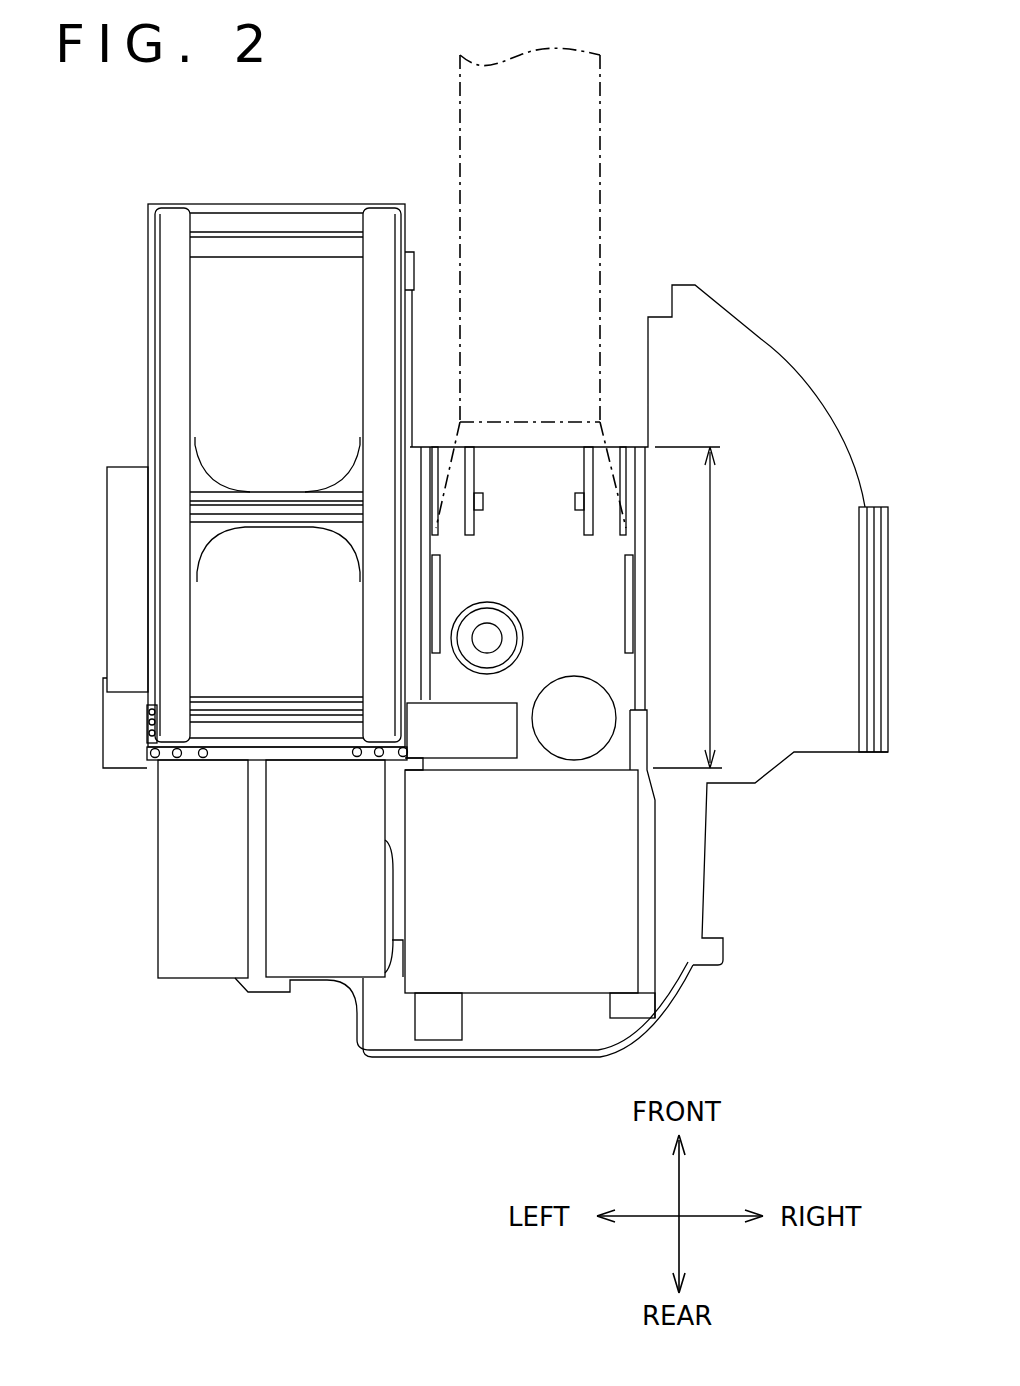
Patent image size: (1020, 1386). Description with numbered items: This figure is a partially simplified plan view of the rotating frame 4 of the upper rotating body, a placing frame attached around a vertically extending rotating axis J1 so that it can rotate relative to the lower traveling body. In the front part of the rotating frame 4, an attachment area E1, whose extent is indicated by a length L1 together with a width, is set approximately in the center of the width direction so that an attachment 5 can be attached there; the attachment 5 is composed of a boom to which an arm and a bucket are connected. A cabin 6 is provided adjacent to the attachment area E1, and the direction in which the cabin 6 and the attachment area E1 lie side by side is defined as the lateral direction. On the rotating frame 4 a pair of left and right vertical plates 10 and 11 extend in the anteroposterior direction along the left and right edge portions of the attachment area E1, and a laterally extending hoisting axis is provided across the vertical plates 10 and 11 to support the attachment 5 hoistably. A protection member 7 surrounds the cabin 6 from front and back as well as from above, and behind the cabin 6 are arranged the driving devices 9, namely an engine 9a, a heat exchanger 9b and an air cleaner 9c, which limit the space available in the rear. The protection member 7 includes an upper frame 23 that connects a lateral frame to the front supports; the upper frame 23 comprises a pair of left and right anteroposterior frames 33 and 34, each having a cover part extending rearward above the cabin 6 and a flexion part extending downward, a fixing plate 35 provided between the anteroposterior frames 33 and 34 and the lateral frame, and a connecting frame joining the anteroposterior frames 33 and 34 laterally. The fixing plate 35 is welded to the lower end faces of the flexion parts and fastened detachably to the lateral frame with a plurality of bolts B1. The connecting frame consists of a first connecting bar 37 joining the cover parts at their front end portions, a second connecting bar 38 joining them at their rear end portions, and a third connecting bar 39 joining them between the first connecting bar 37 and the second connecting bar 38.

The rotating frame 4 is at (748, 339).
The attachment 5 is at (602, 173).
The cabin 6 is at (242, 416).
The protection member 7 is at (262, 196).
The driving devices 9 is at (425, 950).
The engine 9a is at (530, 925).
The heat exchanger 9b is at (323, 960).
The air cleaner 9c is at (207, 965).
The vertical plate 10 is at (423, 573).
The vertical plate 11 is at (642, 568).
The upper frame 23 is at (135, 450).
The anteroposterior frame 33 is at (182, 527).
The anteroposterior frame 34 is at (382, 553).
The fixing plate 35 is at (228, 752).
The first connecting bar 37 is at (281, 223).
The second connecting bar 38 is at (278, 727).
The third connecting bar 39 is at (272, 508).
The bolts B1 is at (203, 760).
The attachment area E1 is at (545, 470).
The rotating axis J1 is at (490, 640).
The length L1 is at (702, 607).